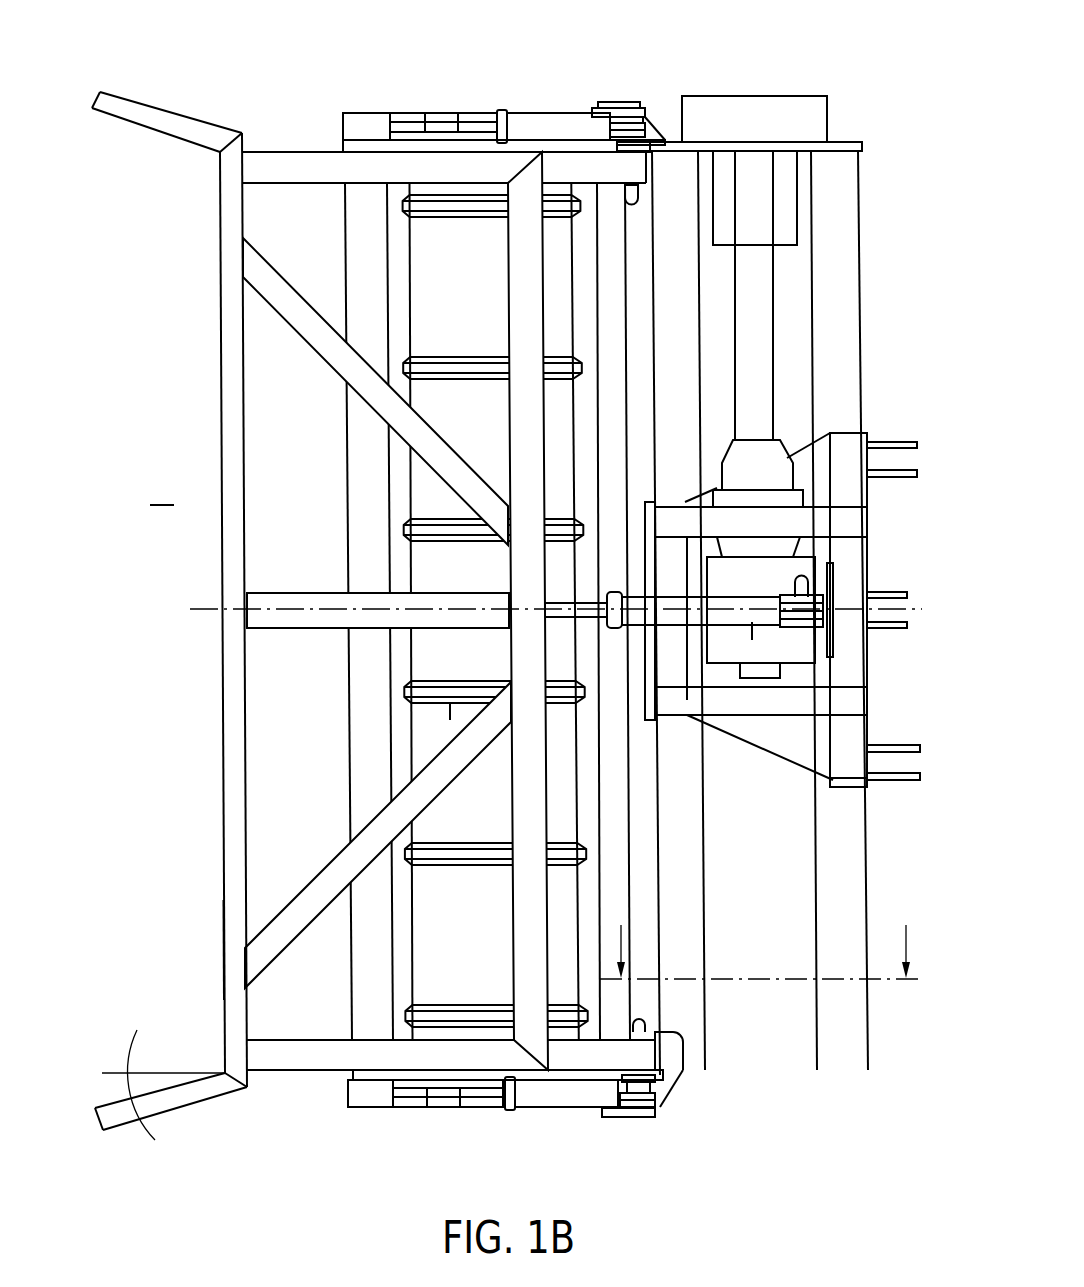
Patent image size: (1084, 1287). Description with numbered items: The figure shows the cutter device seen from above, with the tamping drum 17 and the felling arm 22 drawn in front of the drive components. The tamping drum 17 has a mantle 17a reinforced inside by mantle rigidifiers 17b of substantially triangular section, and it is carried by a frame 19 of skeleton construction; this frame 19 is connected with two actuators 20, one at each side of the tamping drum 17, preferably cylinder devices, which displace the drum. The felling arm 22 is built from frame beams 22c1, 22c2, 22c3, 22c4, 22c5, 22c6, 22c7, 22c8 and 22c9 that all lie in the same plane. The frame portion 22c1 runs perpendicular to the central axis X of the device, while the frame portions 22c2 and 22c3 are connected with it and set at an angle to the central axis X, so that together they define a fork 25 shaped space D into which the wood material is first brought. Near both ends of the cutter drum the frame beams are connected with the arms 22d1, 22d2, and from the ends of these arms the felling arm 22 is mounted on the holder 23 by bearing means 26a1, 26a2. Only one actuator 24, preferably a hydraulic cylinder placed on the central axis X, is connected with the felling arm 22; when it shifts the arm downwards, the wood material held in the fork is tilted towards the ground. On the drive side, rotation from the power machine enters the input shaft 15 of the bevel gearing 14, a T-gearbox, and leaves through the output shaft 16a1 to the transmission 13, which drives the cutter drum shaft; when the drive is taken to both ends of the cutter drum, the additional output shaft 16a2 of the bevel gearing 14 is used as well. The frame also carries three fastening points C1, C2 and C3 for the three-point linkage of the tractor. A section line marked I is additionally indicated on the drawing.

The transmission 13 is at (773, 118).
The bevel gearing 14 is at (777, 550).
The input shaft 15 is at (820, 592).
The output shaft 16a1 is at (753, 373).
The additional output shaft 16a2 is at (757, 680).
The tamping drum 17 is at (392, 665).
The mantle 17a is at (425, 715).
The mantle rigidifiers 17b is at (450, 698).
The frame 19 is at (373, 1103).
The cylinder device 20 is at (560, 120).
The felling arm 22 is at (191, 92).
The frame portion 22c1 is at (232, 660).
The frame portion 22c2 is at (186, 1100).
The frame portion 22c3 is at (154, 122).
The frame beam 22c4 is at (528, 931).
The frame beam 22c5 is at (305, 1048).
The frame beam 22c6 is at (318, 884).
The frame beam 22c7 is at (289, 598).
The frame beam 22c8 is at (322, 345).
The frame beam 22c9 is at (291, 150).
The arm 22d1 is at (565, 1058).
The arm 22d2 is at (547, 160).
The holder 23 is at (626, 108).
The actuator 24 is at (752, 622).
The fork 25 is at (216, 946).
The bearing means 26a1 is at (657, 1040).
The bearing means 26a2 is at (633, 170).
The fastening point C1 is at (892, 590).
The fastening point C2 is at (903, 787).
The fastening point C3 is at (903, 442).
The fork shaped space D is at (162, 490).
The central axis X is at (913, 615).
The section line I is at (761, 934).